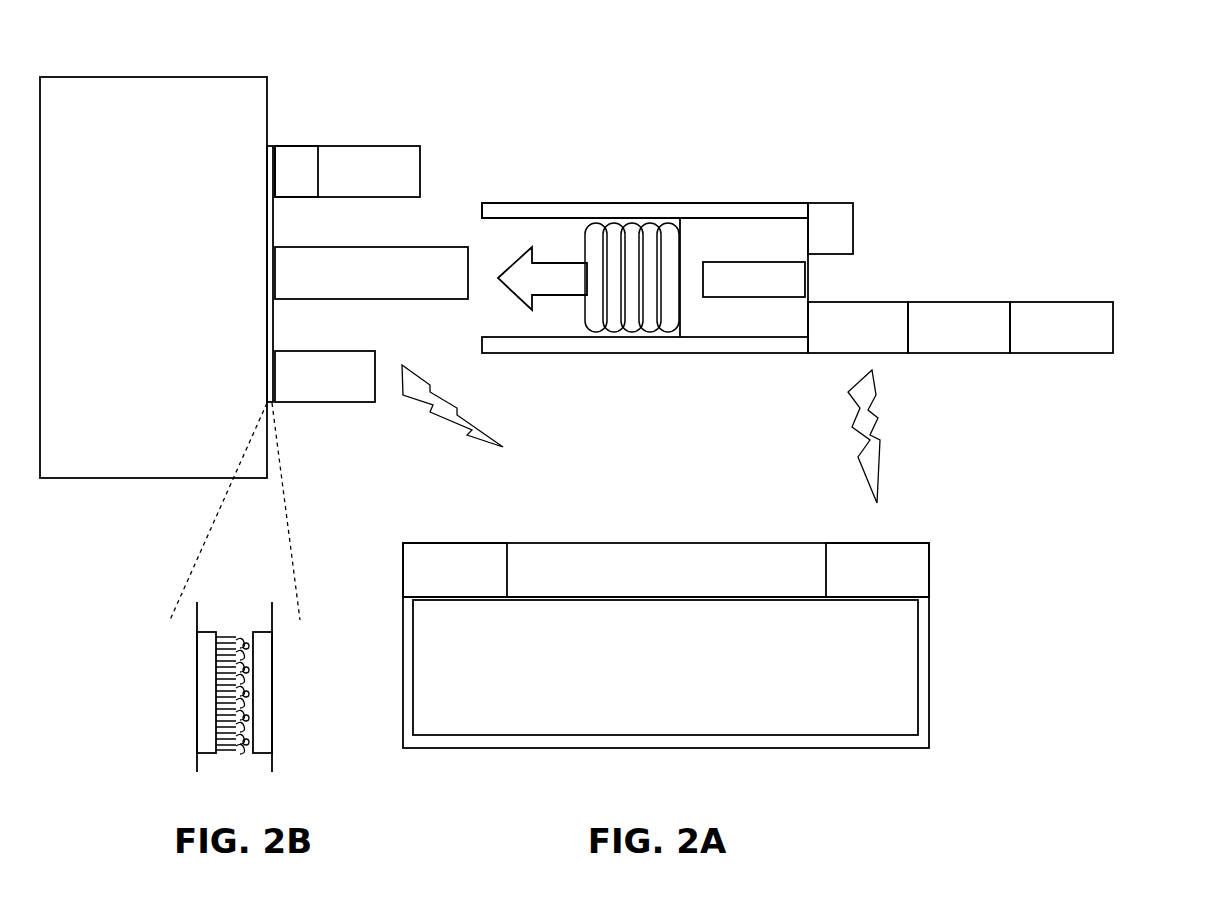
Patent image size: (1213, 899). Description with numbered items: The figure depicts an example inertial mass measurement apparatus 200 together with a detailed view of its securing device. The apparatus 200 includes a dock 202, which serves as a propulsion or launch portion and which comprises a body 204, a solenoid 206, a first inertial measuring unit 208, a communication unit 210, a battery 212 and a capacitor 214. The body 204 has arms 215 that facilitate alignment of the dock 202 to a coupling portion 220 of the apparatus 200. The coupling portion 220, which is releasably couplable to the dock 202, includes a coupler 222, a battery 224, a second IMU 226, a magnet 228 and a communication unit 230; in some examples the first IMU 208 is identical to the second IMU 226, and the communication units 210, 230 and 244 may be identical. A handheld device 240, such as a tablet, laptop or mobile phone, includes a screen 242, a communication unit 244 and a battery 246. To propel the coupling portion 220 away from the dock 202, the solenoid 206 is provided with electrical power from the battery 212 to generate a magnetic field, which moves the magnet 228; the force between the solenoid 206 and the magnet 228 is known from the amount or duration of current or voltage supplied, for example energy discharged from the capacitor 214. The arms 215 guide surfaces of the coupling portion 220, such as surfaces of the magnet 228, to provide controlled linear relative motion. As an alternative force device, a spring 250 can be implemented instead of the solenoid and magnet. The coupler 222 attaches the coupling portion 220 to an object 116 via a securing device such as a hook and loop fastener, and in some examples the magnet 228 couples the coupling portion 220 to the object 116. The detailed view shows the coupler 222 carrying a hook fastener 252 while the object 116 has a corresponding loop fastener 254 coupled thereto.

In FIG. 2A, the object 116 is at (135, 87).
In FIG. 2B, the object 116 is at (160, 672).
In FIG. 2A, the inertial mass measurement apparatus 200 is at (1107, 77).
In FIG. 2A, the dock 202 is at (842, 107).
In FIG. 2A, the body 204 is at (700, 203).
In FIG. 2A, the solenoid 206 is at (808, 282).
In FIG. 2A, the first inertial measuring unit 208 is at (840, 203).
In FIG. 2A, the communication unit 210 is at (892, 353).
In FIG. 2A, the battery 212 is at (962, 302).
In FIG. 2A, the capacitor 214 is at (1088, 302).
In FIG. 2A, the arms 215 is at (602, 210).
In FIG. 2A, the coupling portion 220 is at (440, 117).
In FIG. 2A, the coupler 222 is at (270, 145).
In FIG. 2B, the coupler 222 is at (272, 593).
In FIG. 2A, the battery 224 is at (421, 147).
In FIG. 2A, the second IMU 226 is at (295, 145).
In FIG. 2A, the magnet 228 is at (417, 247).
In FIG. 2A, the communication unit 230 is at (295, 403).
In FIG. 2A, the handheld device 240 is at (1045, 600).
In FIG. 2A, the screen 242 is at (775, 725).
In FIG. 2A, the communication unit 244 is at (900, 543).
In FIG. 2A, the battery 246 is at (460, 543).
In FIG. 2A, the spring 250 is at (633, 237).
In FIG. 2B, the hook fastener 252 is at (240, 717).
In FIG. 2B, the loop fastener 254 is at (218, 700).